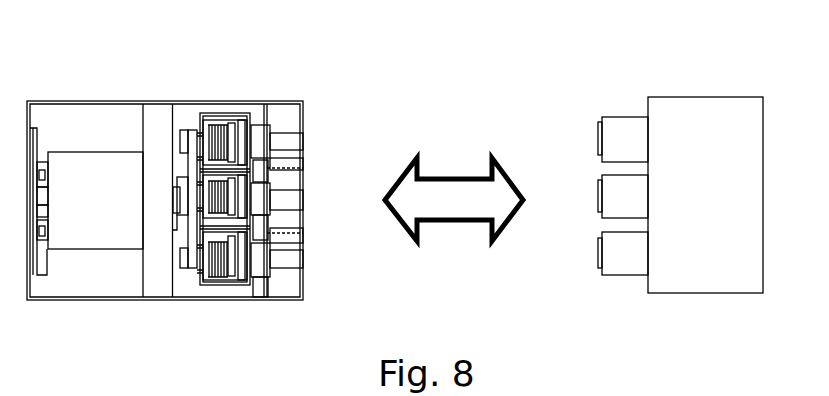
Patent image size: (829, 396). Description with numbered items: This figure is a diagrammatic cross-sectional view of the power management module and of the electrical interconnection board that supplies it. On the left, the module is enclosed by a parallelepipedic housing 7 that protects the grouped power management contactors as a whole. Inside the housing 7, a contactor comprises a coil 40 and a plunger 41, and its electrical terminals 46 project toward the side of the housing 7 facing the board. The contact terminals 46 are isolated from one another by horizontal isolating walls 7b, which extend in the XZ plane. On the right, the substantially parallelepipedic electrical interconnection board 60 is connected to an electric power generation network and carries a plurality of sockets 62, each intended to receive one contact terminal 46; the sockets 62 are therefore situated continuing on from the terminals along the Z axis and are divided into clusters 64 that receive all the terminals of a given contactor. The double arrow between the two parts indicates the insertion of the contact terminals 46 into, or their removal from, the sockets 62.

The management module housing 7 is at (60, 101).
The coil 40 is at (103, 162).
The plunger 41 is at (218, 123).
The electrical terminals 46 is at (298, 142).
The horizontal isolating walls 7b is at (298, 168).
The electrical interconnection board 60 is at (707, 113).
The sockets 62 is at (623, 260).
The clusters 64 is at (626, 92).